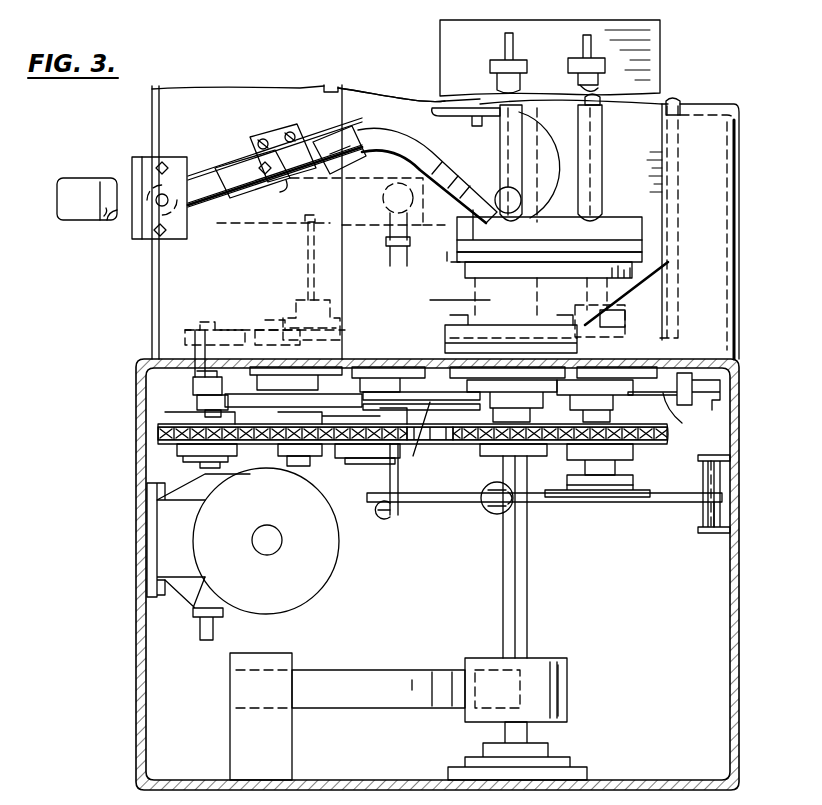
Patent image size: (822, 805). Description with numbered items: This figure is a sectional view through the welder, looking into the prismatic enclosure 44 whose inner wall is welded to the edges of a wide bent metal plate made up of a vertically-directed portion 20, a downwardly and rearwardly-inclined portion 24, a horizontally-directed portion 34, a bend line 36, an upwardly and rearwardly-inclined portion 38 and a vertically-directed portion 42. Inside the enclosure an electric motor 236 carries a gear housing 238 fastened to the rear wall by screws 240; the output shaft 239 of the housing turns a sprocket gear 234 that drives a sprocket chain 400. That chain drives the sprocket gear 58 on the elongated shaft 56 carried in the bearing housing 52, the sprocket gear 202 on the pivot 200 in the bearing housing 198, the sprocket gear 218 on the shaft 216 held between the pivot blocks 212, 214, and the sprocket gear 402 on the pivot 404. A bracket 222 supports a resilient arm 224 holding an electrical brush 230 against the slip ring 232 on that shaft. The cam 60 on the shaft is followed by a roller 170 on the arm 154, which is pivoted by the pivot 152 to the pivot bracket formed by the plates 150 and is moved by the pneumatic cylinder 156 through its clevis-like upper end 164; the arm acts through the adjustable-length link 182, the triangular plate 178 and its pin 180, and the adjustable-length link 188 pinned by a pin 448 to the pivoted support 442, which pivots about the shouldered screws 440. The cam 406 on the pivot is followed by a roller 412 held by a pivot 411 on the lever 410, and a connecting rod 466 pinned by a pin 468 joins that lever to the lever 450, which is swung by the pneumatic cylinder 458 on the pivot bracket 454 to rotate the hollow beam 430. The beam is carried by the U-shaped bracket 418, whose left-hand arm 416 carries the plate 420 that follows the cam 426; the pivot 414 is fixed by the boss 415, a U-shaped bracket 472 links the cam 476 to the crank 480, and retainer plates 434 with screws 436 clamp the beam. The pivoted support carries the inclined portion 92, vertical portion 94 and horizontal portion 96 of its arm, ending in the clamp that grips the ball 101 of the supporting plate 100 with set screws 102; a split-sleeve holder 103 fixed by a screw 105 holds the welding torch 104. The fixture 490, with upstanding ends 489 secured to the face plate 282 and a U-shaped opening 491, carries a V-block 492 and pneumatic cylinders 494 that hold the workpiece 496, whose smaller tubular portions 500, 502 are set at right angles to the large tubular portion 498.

The vertically-directed portion 20 is at (740, 120).
The downwardly and rearwardly-inclined portion 24 is at (728, 146).
The horizontally-directed portion 34 is at (380, 94).
The bend line 36 is at (328, 85).
The upwardly and rearwardly-inclined portion 38 is at (222, 87).
The vertically-directed portion 42 is at (152, 94).
The prismatic enclosure 44 is at (136, 678).
The bearing housing 52 is at (578, 404).
The shaft 56 is at (602, 92).
The sprocket gear 58 is at (620, 488).
The cam 60 is at (646, 500).
The rearwardly and upwardly-inclined portion 92 is at (218, 226).
The vertically-directed portion 94 is at (106, 222).
The horizontally-directed portion 96 is at (112, 178).
The supporting plate 100 is at (206, 174).
The ball 101 is at (160, 210).
The set screws 102 is at (164, 160).
The split-sleeve holder 103 is at (300, 132).
The welding torch 104 is at (392, 138).
The screw 105 is at (262, 184).
The plates 150 is at (698, 458).
The pivot 152 is at (706, 512).
The arm 154 is at (424, 502).
The pneumatic cylinder 156 is at (490, 508).
The clevis-like upper end 164 is at (496, 514).
The roller 170 is at (582, 494).
The triangular plate 178 is at (396, 514).
The pin 180 is at (380, 515).
The adjustable-length link 182 is at (386, 516).
The adjustable-length link 188 is at (388, 312).
The bearing housing 198 is at (378, 380).
The pivot 200 is at (360, 444).
The sprocket gear 202 is at (386, 448).
The pivot block 212 is at (550, 745).
The pivot block 214 is at (480, 370).
The shaft 216 is at (527, 604).
The sprocket gear 218 is at (488, 452).
The bracket 222 is at (286, 736).
The resilient arm 224 is at (344, 670).
The electrical brush 230 is at (530, 680).
The slip ring 232 is at (567, 684).
The sprocket gear 234 is at (165, 414).
The electric motor 236 is at (262, 612).
The gear housing 238 is at (178, 610).
The output shaft 239 is at (200, 470).
The screws 240 is at (160, 520).
The face plate 282 is at (580, 354).
The sprocket chain 400 is at (158, 442).
The sprocket gear 402 is at (290, 456).
The pivot 404 is at (302, 468).
The cam 406 is at (268, 398).
The lever 410 is at (193, 386).
The pivot 411 is at (205, 414).
The roller 412 is at (197, 402).
The pivot 414 is at (197, 316).
The boss 415 is at (192, 340).
The left-hand arm 416 is at (234, 330).
The U-shaped bracket 418 is at (680, 104).
The plate 420 is at (620, 322).
The cam 426 is at (618, 305).
The beam 430 is at (440, 292).
The retainer plates 434 is at (490, 90).
The screws 436 is at (472, 120).
The shouldered screws 440 is at (498, 182).
The pivoted support 442 is at (438, 236).
The pin 448 is at (378, 186).
The lever 450 is at (490, 400).
The pivot bracket 454 is at (708, 398).
The pneumatic cylinder 458 is at (682, 423).
The connecting rod 466 is at (414, 452).
The pin 468 is at (200, 377).
The U-shaped bracket 472 is at (276, 308).
The cam 476 is at (282, 312).
The crank 480 is at (304, 226).
The upstanding ends 489 is at (546, 322).
The fixture 490 is at (645, 100).
The U-shaped opening 491 is at (552, 140).
The V-block 492 is at (632, 266).
The pneumatic cylinders 494 is at (576, 60).
The workpiece 496 is at (618, 194).
The tubular portion 498 is at (636, 228).
The tubular portion 500 is at (580, 88).
The tubular portion 502 is at (596, 134).